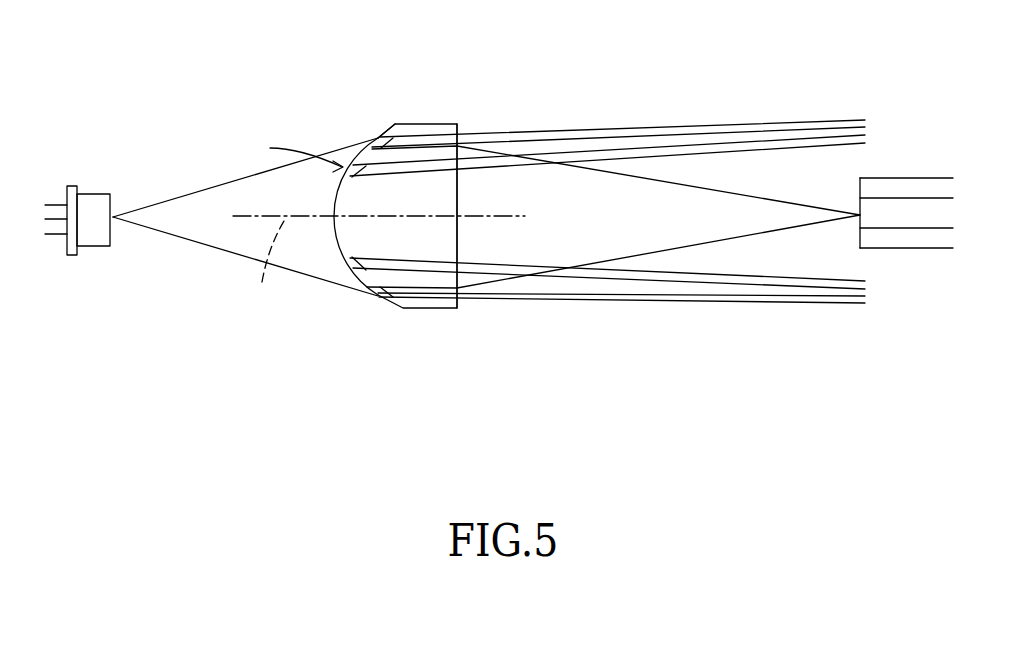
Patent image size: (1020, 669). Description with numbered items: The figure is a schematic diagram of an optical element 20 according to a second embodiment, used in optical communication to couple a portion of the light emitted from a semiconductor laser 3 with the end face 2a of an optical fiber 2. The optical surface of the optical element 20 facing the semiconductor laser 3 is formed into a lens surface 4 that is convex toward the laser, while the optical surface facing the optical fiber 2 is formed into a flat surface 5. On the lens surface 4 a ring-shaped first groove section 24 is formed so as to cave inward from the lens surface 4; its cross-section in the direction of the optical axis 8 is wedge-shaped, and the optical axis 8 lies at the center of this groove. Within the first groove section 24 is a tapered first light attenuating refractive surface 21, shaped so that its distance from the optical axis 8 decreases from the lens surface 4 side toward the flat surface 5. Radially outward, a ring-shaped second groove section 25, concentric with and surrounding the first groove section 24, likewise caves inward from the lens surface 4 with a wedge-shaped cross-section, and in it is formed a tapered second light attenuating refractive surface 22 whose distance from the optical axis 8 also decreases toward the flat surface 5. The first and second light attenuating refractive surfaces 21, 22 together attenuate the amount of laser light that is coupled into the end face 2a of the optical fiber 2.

The optical fiber 2 is at (861, 188).
The end face of the optical fiber 2a is at (860, 224).
The semiconductor laser 3 is at (96, 194).
The lens surface 4 is at (336, 238).
The flat surface 5 is at (458, 231).
The optical axis 8 is at (269, 267).
The optical element 20 is at (365, 167).
The first light attenuating refractive surface 21 is at (337, 188).
The second light attenuating refractive surface 22 is at (350, 150).
The first groove section 24 is at (280, 152).
The second groove section 25 is at (374, 136).